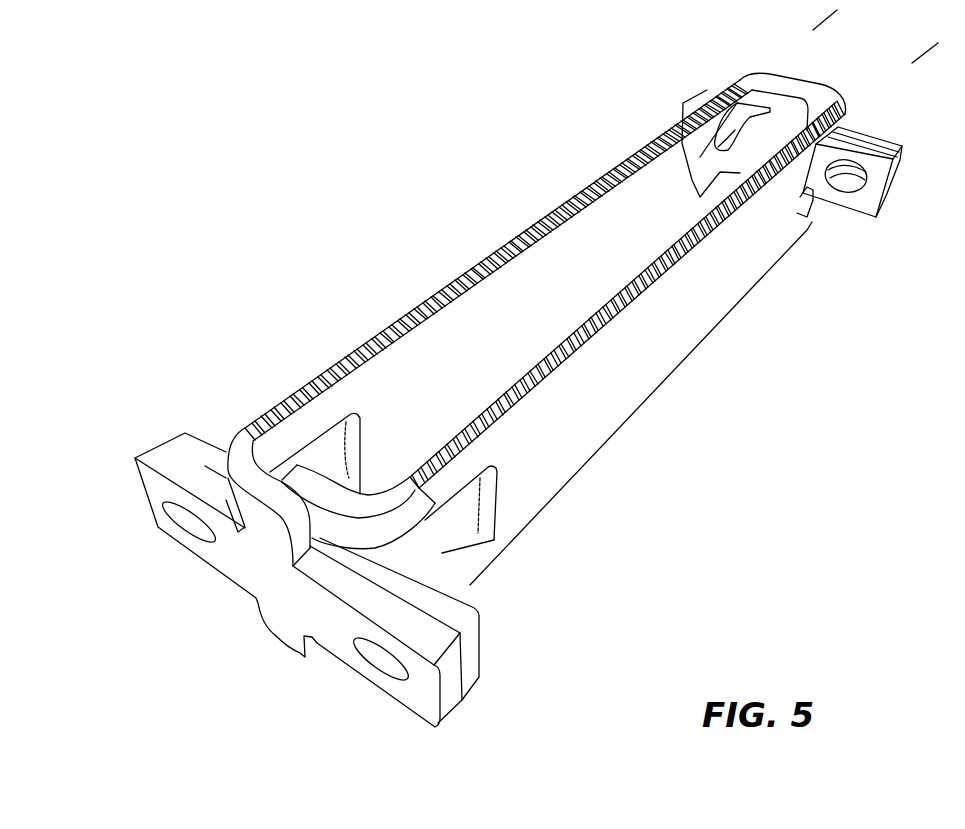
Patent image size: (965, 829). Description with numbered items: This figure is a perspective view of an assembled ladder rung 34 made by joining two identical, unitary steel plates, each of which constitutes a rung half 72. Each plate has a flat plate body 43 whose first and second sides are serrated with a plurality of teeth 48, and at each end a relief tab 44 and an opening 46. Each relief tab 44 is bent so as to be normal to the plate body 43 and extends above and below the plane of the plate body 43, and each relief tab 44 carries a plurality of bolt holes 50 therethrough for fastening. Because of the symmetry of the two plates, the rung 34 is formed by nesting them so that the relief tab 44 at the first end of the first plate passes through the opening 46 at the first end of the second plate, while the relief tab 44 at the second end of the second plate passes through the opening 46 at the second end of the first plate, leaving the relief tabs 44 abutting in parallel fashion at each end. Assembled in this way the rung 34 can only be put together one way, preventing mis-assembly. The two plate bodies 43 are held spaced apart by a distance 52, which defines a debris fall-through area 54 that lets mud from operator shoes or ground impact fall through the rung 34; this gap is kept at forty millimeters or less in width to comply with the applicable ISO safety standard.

The rung 34 is at (408, 184).
The plate body 43 is at (613, 403).
The relief tab 44 is at (470, 653).
The opening 46 is at (325, 453).
The teeth 48 is at (317, 378).
The bolt holes 50 is at (192, 523).
The distance 52 is at (920, 52).
The debris fall-through area 54 is at (518, 290).
The rung half 72 is at (567, 186).